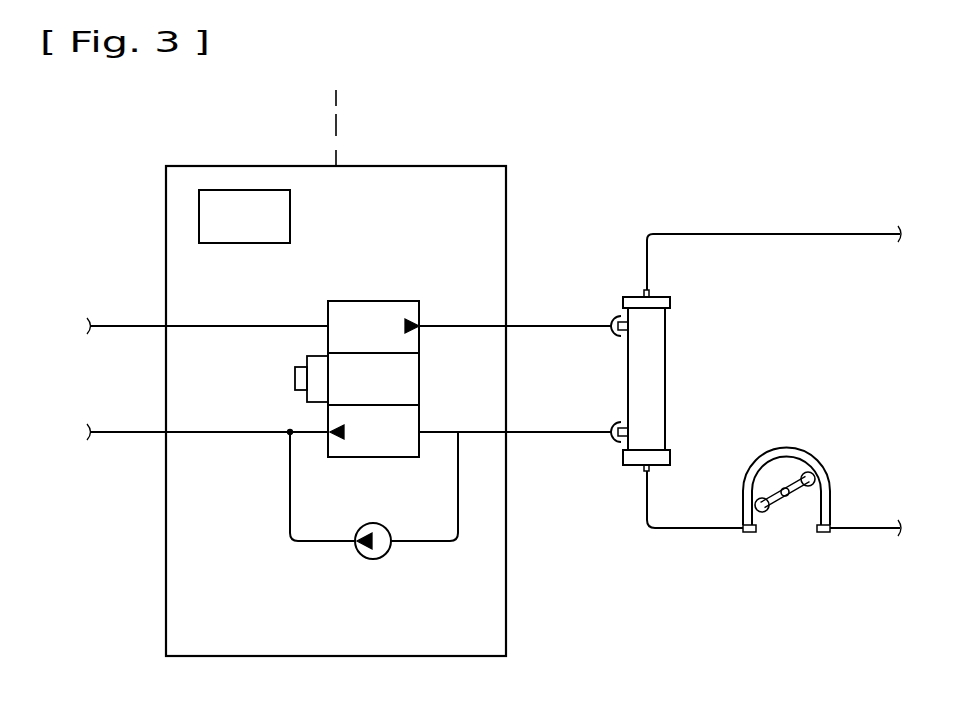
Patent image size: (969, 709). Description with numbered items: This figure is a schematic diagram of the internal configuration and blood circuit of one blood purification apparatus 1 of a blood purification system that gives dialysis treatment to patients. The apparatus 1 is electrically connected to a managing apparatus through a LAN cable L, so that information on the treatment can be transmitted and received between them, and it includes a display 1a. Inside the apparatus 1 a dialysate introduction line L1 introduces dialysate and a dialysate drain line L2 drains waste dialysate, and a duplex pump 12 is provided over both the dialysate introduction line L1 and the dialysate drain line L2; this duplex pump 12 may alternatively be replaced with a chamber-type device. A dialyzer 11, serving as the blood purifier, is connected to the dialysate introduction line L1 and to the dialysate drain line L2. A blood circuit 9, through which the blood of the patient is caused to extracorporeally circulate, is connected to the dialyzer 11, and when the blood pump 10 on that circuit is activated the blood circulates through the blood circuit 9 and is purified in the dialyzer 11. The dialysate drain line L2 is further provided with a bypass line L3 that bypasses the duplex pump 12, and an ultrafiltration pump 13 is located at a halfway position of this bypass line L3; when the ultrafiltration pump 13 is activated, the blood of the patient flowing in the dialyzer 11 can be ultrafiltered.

The blood purification apparatus 1 is at (595, 172).
The display 1a is at (259, 230).
The LAN cable L is at (333, 128).
The dialysate introduction line L1 is at (528, 325).
The dialysate drain line L2 is at (528, 430).
The bypass line L3 is at (458, 506).
The duplex pump 12 is at (395, 300).
The ultrafiltration pump 13 is at (378, 560).
The dialyzer 11 is at (670, 369).
The blood circuit 9 is at (698, 525).
The blood pump 10 is at (791, 534).